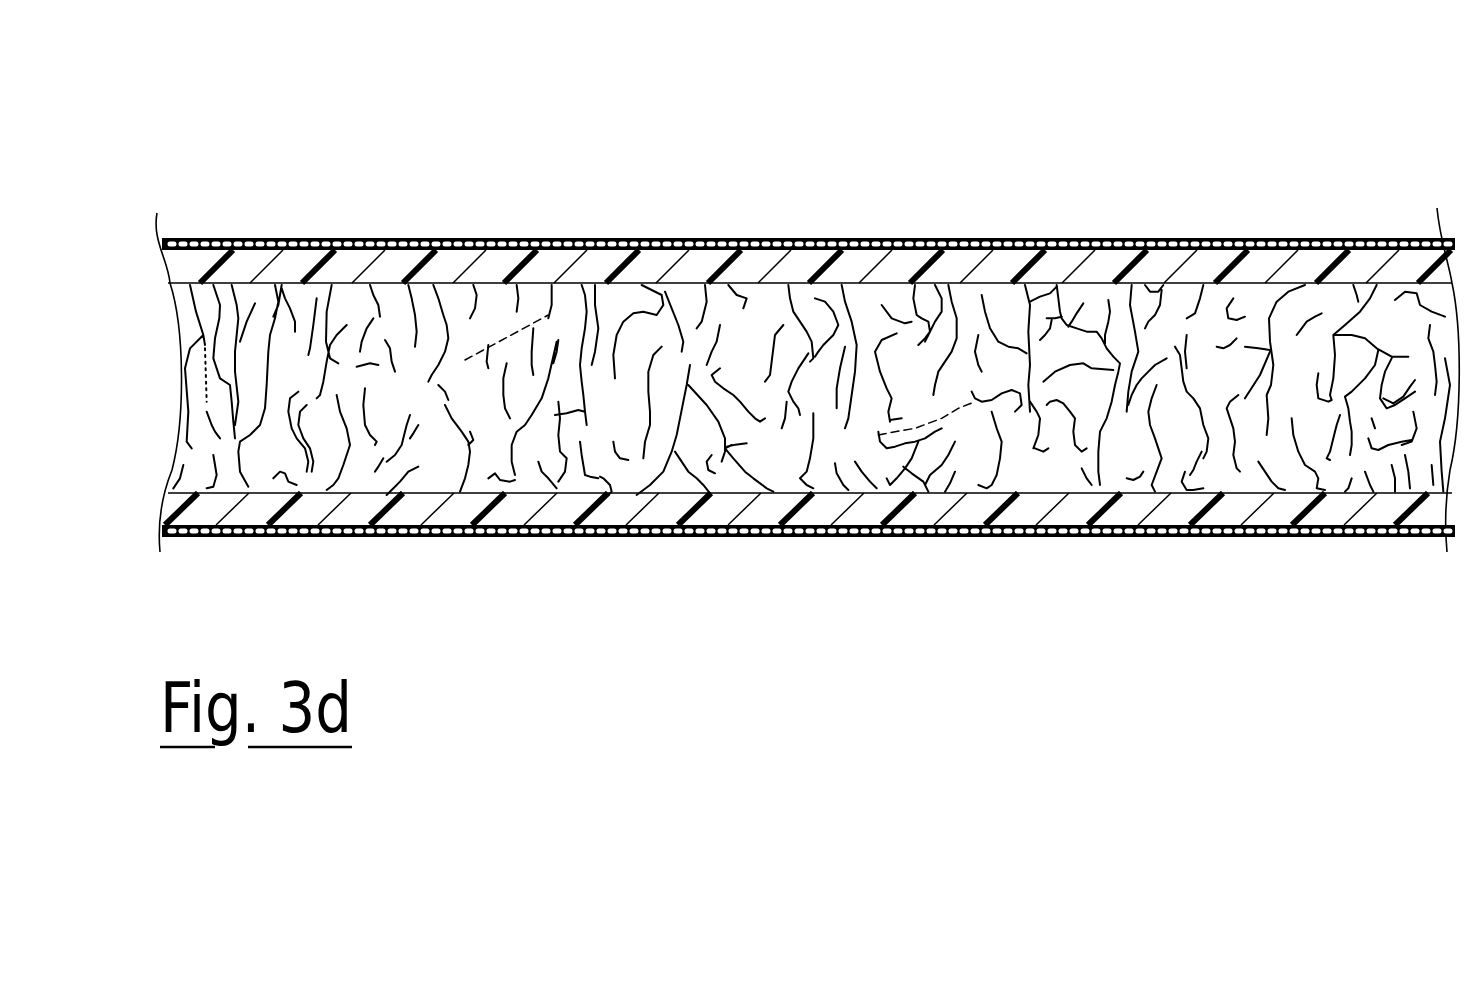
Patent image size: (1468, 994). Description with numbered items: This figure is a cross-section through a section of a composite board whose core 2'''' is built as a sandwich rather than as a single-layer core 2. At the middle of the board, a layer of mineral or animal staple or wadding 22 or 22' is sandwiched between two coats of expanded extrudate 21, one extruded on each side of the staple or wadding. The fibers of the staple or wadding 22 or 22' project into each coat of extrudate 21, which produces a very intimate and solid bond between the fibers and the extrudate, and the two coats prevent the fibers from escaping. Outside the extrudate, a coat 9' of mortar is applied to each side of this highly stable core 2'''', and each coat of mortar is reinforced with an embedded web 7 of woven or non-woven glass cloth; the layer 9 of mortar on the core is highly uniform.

The core 2 is at (811, 294).
The core 2'''' is at (807, 296).
The web 7 is at (515, 240).
The layer of mortar 9 is at (807, 374).
The coat of mortar 9' is at (808, 374).
The layer of expanding extrudate 21 is at (918, 256).
The layer of staple or wadding 22 is at (1090, 289).
The layer of staple or wadding 22' is at (1256, 264).